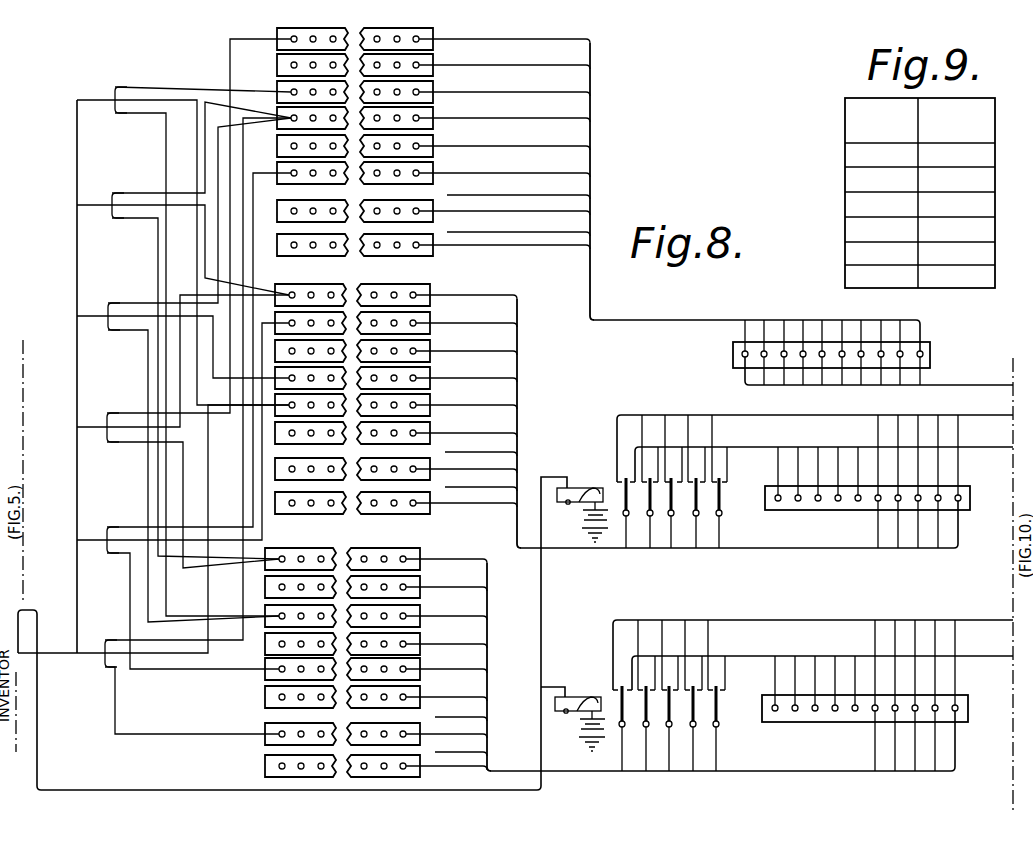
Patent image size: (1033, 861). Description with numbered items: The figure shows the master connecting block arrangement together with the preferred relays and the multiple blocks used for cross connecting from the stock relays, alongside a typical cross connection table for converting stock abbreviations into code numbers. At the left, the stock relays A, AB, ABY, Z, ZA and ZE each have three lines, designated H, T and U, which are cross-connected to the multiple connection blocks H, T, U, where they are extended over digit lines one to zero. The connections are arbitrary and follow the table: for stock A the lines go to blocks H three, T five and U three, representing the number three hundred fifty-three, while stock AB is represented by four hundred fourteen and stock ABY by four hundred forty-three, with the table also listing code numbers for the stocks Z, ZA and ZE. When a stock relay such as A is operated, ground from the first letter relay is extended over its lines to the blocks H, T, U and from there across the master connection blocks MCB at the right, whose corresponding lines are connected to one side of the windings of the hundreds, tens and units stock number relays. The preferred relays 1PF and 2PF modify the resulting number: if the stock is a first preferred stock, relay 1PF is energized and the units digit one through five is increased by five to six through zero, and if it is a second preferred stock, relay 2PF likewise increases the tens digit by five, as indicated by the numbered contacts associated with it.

The stock relay A is at (184, 344).
The stock relay AB is at (184, 330).
The stock relay ABY is at (181, 370).
The stock relay Z is at (184, 303).
The stock relay ZA is at (184, 421).
The stock relay ZE is at (154, 426).
The multiple connection block H is at (435, 163).
The multiple connection block T is at (398, 407).
The multiple connection block U is at (378, 654).
The master connection blocks MCB is at (803, 344).
The second preferred relay 2PF is at (767, 481).
The first preferred relay 1PF is at (752, 695).